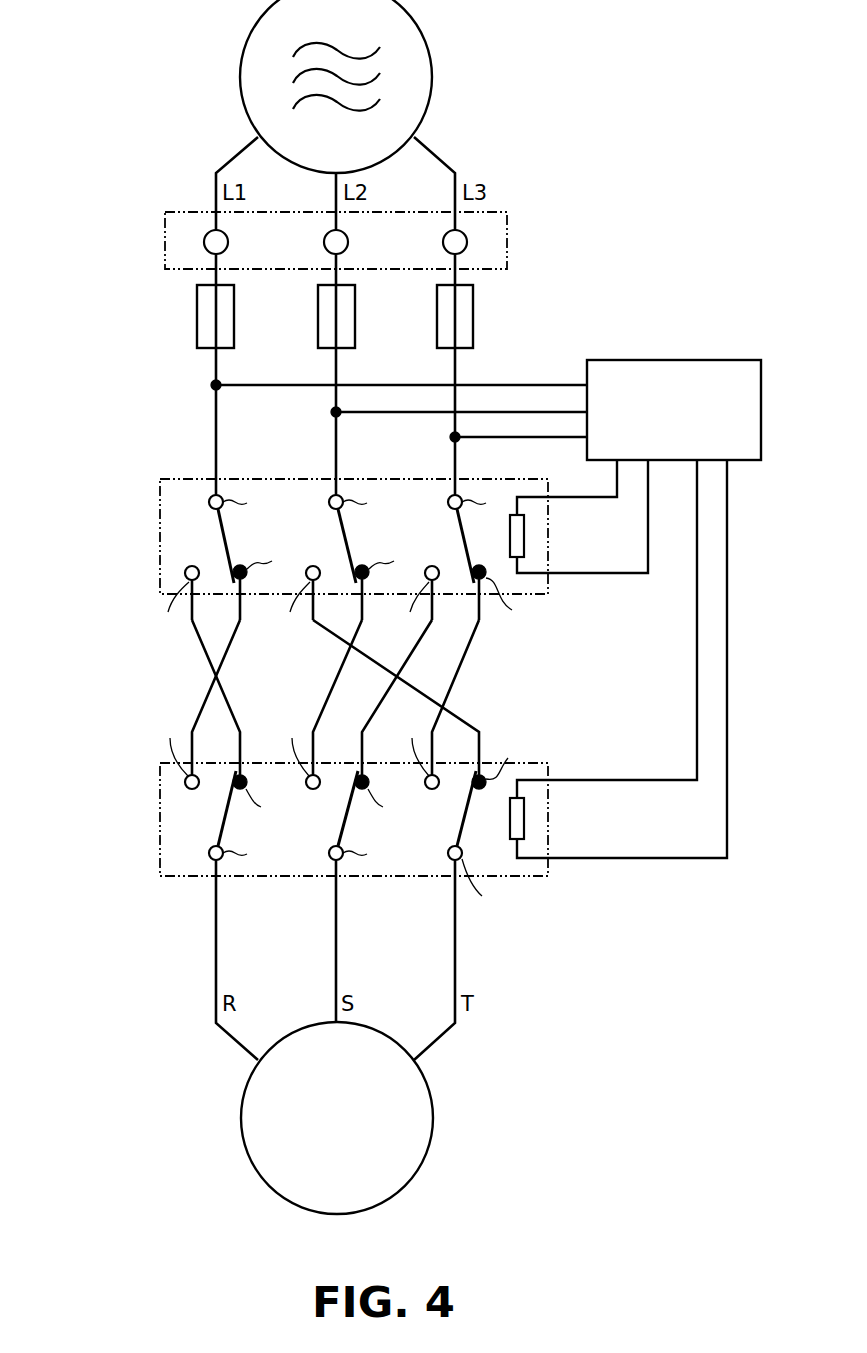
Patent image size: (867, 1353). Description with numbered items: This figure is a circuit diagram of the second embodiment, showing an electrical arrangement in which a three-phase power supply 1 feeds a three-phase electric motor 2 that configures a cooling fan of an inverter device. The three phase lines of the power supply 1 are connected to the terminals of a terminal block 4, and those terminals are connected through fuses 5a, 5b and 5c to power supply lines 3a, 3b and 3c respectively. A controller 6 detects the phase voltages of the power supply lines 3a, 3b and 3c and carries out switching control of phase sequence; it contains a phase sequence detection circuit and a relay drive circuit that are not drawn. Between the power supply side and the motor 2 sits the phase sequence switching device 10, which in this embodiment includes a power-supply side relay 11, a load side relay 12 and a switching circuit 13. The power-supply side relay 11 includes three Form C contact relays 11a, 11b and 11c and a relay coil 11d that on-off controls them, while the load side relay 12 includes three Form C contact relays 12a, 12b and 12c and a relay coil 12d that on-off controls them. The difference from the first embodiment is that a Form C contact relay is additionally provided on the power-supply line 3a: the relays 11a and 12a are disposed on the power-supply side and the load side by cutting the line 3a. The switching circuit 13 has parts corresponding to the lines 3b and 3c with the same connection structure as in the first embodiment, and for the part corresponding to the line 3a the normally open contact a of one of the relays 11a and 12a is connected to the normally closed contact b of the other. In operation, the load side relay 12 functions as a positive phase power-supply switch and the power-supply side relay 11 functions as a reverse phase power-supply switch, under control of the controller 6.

The three-phase power supply 1 is at (432, 78).
The three-phase electric motor 2 is at (433, 1117).
The power supply line 3a is at (216, 368).
The power supply line 3b is at (336, 368).
The power supply line 3c is at (456, 368).
The terminal block 4 is at (507, 242).
The fuse 5a is at (234, 315).
The fuse 5b is at (355, 315).
The fuse 5c is at (473, 315).
The controller 6 is at (686, 360).
The phase sequence switching device 10 is at (146, 672).
The power-supply side relay 11 is at (160, 525).
The Form C contact relay 11a is at (205, 540).
The Form C contact relay 11b is at (323, 540).
The Form C contact relay 11c is at (443, 540).
The relay coil 11d is at (525, 534).
The load side relay 12 is at (160, 820).
The Form C contact relay 12a is at (200, 817).
The Form C contact relay 12b is at (322, 817).
The Form C contact relay 12c is at (442, 817).
The relay coil 12d is at (525, 818).
The switching circuit 13 is at (478, 679).